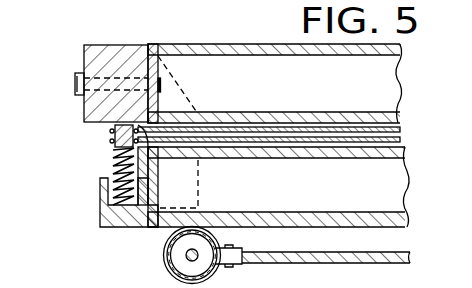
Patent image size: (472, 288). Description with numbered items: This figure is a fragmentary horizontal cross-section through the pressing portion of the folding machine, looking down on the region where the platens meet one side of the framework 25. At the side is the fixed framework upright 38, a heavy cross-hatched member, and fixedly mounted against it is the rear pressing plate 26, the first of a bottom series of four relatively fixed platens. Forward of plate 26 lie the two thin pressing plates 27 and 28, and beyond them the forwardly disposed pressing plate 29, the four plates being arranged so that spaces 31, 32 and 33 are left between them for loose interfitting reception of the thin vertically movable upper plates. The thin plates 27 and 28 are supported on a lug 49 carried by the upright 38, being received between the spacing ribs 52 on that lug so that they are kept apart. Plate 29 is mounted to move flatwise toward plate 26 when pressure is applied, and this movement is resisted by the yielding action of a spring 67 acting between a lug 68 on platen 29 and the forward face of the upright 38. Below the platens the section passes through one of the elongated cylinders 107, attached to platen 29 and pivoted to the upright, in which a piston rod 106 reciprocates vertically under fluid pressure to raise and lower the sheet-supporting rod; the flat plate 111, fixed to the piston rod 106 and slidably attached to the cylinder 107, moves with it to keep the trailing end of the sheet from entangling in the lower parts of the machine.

The framework 25 is at (76, 65).
The pressing plate 26 is at (393, 88).
The pressing plate 27 is at (398, 130).
The pressing plate 28 is at (400, 141).
The pressing plate 29 is at (395, 193).
The space 31 is at (290, 162).
The space 32 is at (298, 157).
The space 33 is at (342, 153).
The framework upright 38 is at (114, 45).
The lug 49 is at (200, 174).
The spacing rib 52 is at (164, 142).
The spring 67 is at (112, 153).
The lug 68 is at (104, 198).
The piston rod 106 is at (186, 256).
The cylinder 107 is at (167, 268).
The flat plate 111 is at (372, 238).